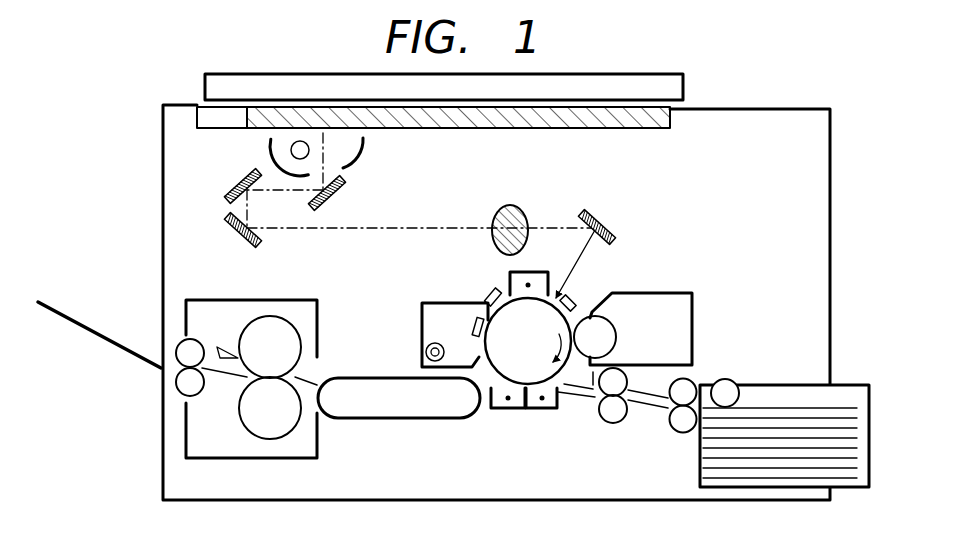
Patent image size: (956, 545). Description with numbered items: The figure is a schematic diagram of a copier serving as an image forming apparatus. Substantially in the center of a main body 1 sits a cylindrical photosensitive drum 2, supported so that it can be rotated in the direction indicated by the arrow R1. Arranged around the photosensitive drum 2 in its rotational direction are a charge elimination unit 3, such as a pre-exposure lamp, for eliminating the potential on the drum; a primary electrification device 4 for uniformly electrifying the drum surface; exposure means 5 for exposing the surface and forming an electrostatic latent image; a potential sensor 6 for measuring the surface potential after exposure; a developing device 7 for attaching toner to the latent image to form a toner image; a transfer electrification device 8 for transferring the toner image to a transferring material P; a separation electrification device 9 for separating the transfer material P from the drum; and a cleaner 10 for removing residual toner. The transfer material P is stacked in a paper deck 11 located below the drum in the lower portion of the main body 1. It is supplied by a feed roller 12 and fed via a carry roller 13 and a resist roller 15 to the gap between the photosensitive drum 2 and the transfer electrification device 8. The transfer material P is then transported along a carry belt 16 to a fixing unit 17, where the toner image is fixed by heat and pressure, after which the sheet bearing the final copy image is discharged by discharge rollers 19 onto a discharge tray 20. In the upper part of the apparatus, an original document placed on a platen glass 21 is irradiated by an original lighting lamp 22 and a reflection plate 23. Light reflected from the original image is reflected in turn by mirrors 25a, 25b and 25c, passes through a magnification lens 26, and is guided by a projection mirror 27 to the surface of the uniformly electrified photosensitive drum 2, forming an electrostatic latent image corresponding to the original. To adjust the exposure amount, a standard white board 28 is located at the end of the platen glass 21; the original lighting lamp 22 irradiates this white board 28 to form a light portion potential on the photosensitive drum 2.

The main body 1 is at (703, 112).
The photosensitive drum 2 is at (497, 376).
The charge elimination unit 3 is at (489, 291).
The primary electrification device 4 is at (530, 270).
The exposure means 5 is at (577, 258).
The potential sensor 6 is at (579, 301).
The developing device 7 is at (684, 292).
The transfer electrification device 8 is at (545, 410).
The separation electrification device 9 is at (492, 410).
The cleaner 10 is at (430, 302).
The paper deck 11 is at (848, 385).
The feed roller 12 is at (730, 380).
The carry roller 13 is at (693, 378).
The resist roller 15 is at (677, 432).
The carry belt 16 is at (405, 378).
The fixing unit 17 is at (303, 300).
The discharge rollers 19 is at (200, 342).
The discharge tray 20 is at (93, 330).
The platen glass 21 is at (672, 128).
The original lighting lamp 22 is at (283, 150).
The reflection plate 23 is at (363, 150).
The mirror 25a is at (343, 195).
The mirror 25b is at (228, 190).
The mirror 25c is at (231, 237).
The magnification lens 26 is at (512, 205).
The projection mirror 27 is at (600, 218).
The standard white board 28 is at (197, 117).
The transfer material P is at (773, 410).
The rotational direction R1 is at (546, 337).